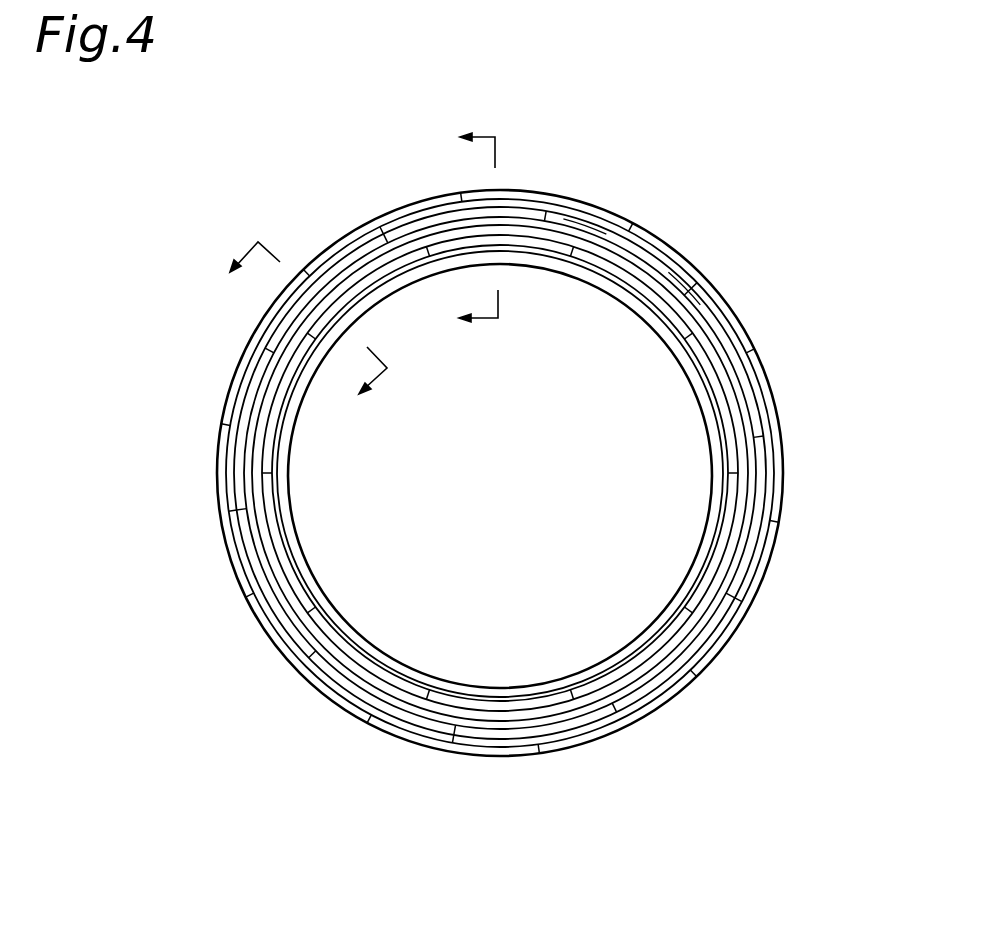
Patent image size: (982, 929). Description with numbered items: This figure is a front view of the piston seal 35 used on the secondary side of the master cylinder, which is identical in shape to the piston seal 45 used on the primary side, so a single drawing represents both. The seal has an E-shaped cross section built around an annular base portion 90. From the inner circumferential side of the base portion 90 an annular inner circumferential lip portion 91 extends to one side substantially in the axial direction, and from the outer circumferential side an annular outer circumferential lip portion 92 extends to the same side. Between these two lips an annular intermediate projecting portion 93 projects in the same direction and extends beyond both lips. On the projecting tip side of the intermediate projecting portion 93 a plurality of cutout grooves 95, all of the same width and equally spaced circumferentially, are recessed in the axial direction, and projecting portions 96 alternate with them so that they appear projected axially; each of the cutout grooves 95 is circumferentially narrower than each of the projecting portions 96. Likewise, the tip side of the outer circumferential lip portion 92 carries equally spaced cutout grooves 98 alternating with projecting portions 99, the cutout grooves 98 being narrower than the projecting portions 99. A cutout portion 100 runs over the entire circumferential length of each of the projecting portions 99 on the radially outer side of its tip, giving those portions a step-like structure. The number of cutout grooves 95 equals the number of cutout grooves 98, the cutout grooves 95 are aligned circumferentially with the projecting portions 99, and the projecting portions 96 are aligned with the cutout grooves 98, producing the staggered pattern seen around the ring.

The piston seal 35 is at (502, 461).
The piston seal 45 is at (502, 468).
The base portion 90 is at (290, 428).
The inner circumferential lip portion 91 is at (705, 420).
The outer circumferential lip portion 92 is at (590, 204).
The intermediate projecting portion 93 is at (706, 286).
The cutout grooves 95 is at (405, 250).
The projecting portions 96 is at (512, 230).
The cutout grooves 98 is at (475, 193).
The projecting portions 99 is at (362, 226).
The cutout portion 100 is at (470, 200).